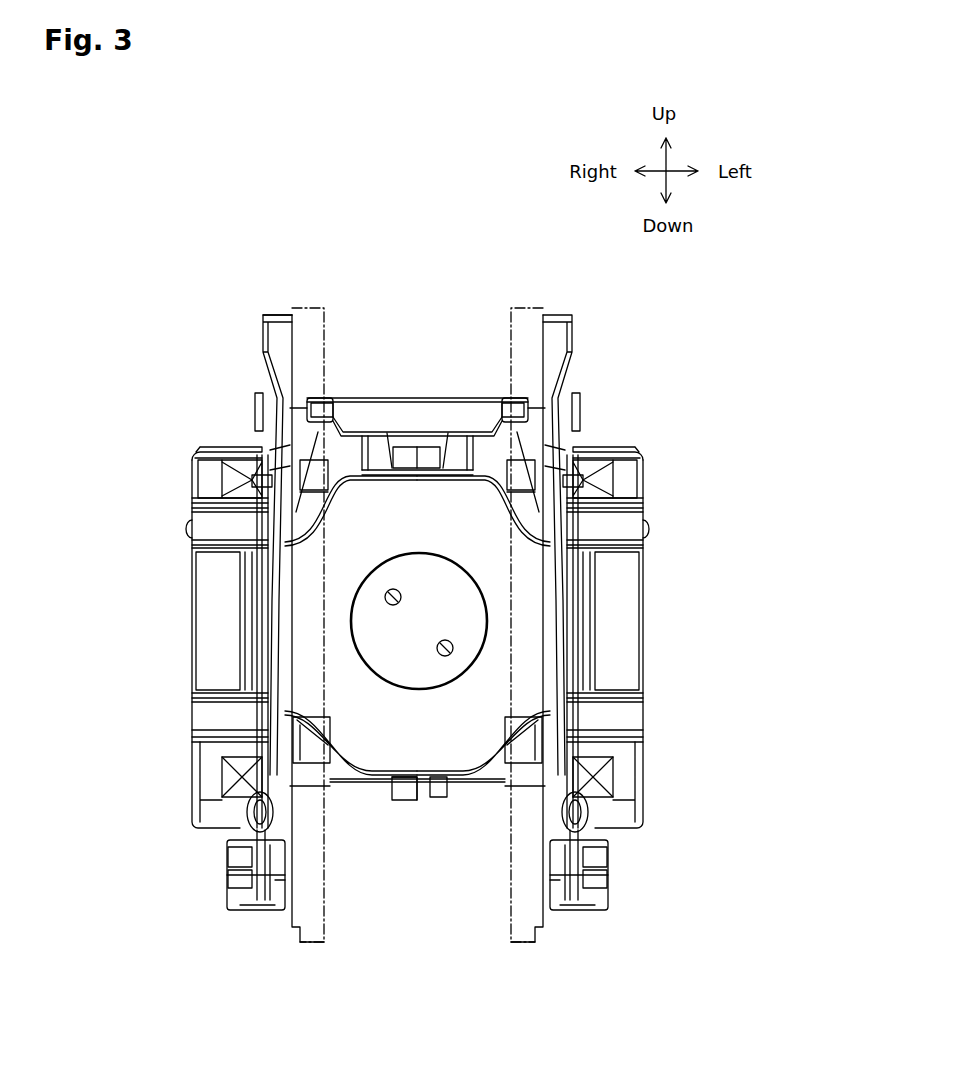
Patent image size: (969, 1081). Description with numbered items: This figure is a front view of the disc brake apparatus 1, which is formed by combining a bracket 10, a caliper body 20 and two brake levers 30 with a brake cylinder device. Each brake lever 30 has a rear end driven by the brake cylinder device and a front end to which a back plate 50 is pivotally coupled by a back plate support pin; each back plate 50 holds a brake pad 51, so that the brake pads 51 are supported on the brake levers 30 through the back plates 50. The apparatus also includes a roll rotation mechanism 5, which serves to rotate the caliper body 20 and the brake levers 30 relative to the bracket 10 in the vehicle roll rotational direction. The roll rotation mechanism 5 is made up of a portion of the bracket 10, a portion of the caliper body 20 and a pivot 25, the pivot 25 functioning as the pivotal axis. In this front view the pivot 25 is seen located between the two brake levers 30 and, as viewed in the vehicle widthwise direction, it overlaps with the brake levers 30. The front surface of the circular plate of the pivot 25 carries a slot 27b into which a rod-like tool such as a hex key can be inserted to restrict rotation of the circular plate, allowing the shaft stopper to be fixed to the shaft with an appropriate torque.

The disc brake apparatus 1 is at (301, 216).
The roll rotation mechanism 5 is at (390, 710).
The bracket 10 is at (410, 374).
The caliper body 20 is at (474, 758).
The pivot 25 is at (422, 688).
The slot 27b is at (445, 656).
The brake lever 30 is at (672, 503).
The back plate 50 is at (565, 313).
The brake pad 51 is at (512, 322).